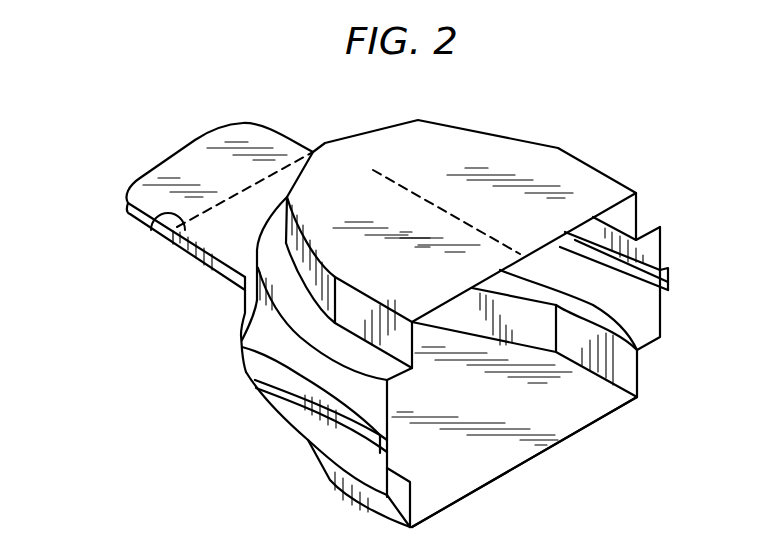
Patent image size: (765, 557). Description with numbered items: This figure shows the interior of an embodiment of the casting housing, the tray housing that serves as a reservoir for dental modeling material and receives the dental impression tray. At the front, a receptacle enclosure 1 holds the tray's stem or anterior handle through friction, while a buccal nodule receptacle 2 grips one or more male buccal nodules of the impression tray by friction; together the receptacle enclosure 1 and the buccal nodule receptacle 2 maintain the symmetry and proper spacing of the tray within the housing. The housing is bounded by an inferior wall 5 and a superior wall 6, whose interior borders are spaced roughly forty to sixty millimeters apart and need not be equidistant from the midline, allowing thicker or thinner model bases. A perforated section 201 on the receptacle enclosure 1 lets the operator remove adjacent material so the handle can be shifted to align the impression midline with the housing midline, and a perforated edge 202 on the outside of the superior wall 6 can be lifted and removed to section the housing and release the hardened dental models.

The receptacle enclosure 1 is at (173, 152).
The buccal nodule receptacle 2 is at (258, 368).
The inferior wall 5 is at (603, 420).
The superior wall 6 is at (543, 238).
The perforated section 201 is at (153, 217).
The perforated edge 202 is at (403, 190).